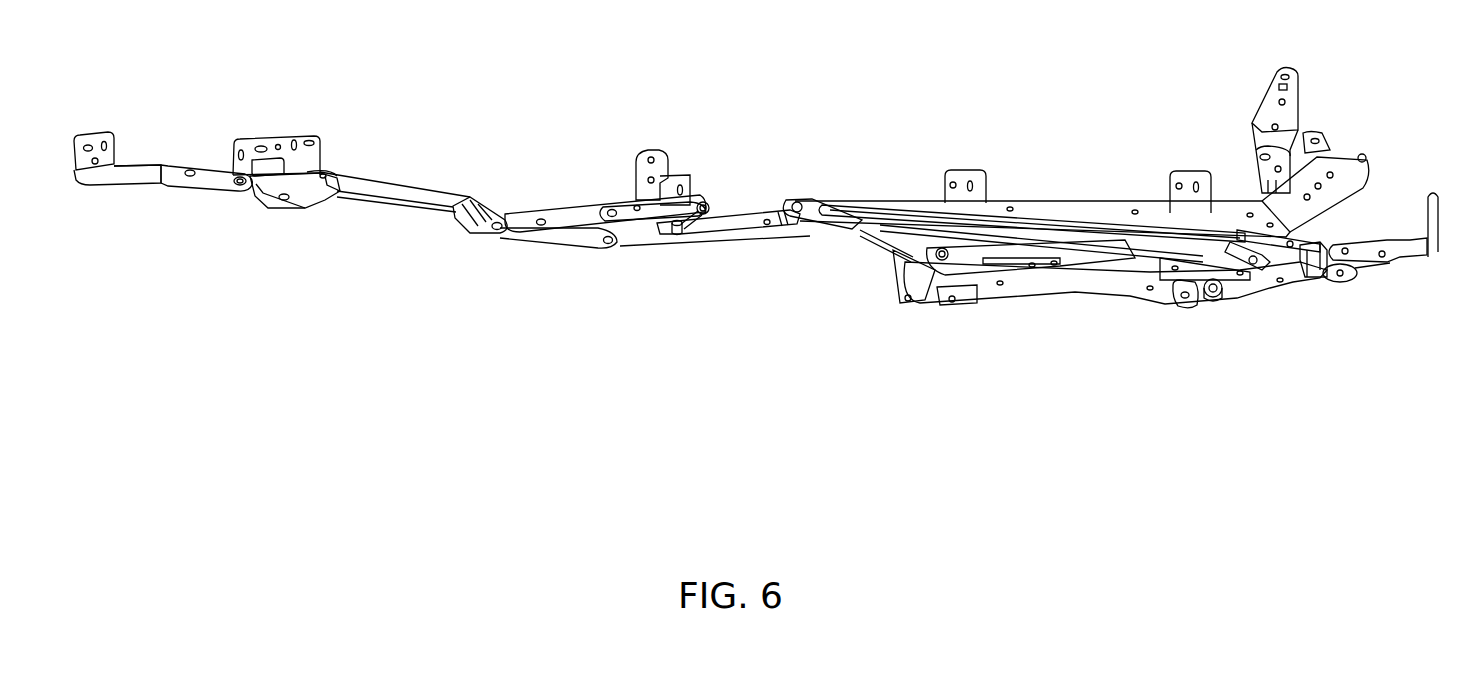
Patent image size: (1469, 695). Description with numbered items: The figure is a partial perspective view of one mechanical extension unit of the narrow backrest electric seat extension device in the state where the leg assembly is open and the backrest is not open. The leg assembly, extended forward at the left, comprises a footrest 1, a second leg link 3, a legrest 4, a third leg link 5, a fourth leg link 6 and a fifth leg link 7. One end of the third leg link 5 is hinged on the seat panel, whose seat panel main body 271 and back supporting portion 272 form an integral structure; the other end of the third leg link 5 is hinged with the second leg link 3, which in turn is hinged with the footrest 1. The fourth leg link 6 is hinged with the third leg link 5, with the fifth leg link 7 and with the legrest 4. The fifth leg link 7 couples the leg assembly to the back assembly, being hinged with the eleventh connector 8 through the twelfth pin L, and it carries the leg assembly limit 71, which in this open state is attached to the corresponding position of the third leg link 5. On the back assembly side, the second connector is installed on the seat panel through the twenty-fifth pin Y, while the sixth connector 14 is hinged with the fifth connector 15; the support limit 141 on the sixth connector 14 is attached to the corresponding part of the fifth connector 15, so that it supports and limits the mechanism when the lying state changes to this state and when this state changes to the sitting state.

The footrest 1 is at (150, 181).
The legrest 4 is at (300, 200).
The second leg link 3 is at (364, 193).
The third leg link 5 is at (561, 218).
The fourth leg link 6 is at (579, 235).
The leg assembly limit 71 is at (676, 230).
The fifth leg link 7 is at (724, 222).
The twelfth pin L is at (797, 203).
The eleventh connector 8 is at (918, 205).
The seat panel main body 271 is at (1076, 208).
The back supporting portion 272 is at (1340, 180).
The twenty-fifth pin Y is at (1367, 157).
The sixth connector 14 is at (1095, 287).
The fifth connector 15 is at (1197, 283).
The support limit 141 is at (1220, 295).